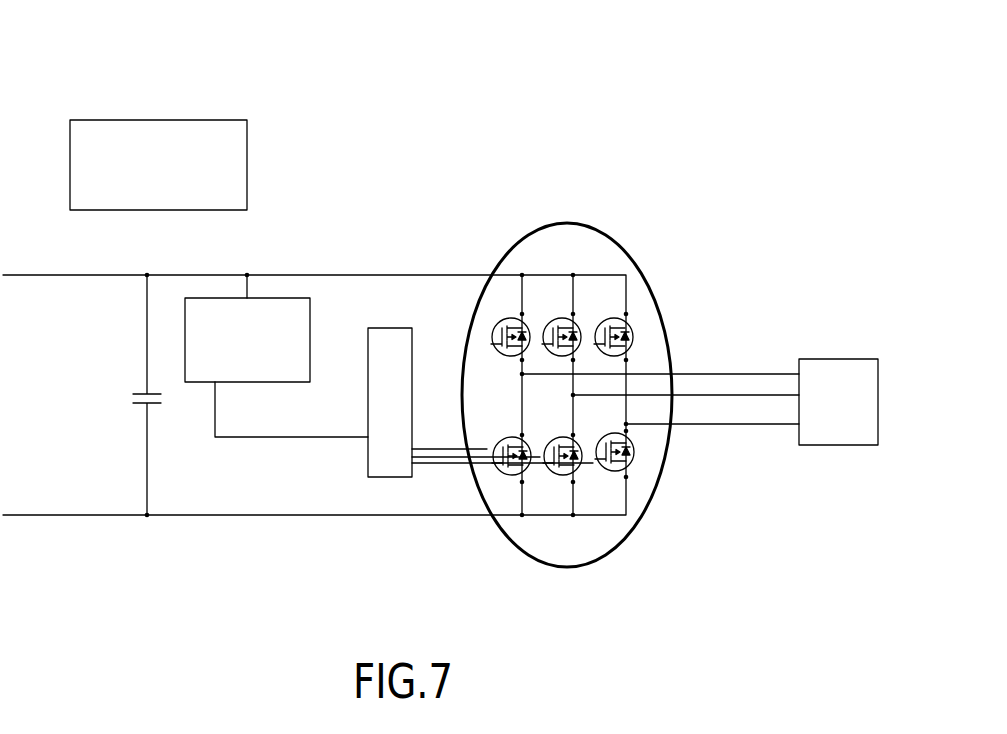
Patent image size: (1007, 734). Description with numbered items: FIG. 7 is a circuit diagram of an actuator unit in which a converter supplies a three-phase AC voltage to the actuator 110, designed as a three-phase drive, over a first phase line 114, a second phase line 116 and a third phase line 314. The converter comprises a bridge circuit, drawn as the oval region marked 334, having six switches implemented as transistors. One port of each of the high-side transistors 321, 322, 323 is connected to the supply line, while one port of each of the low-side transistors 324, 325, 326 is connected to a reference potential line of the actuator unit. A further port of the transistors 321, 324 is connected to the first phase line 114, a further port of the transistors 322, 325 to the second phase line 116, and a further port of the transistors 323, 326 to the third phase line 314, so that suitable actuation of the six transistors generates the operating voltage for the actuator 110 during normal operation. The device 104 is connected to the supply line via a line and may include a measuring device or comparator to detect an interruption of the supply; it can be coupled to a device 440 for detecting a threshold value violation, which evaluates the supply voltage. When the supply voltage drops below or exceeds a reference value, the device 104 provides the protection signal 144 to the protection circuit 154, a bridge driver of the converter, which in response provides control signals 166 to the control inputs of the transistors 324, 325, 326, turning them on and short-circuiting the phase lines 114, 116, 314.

The device for detecting a threshold value violation 440 is at (158, 120).
The transistor 322 is at (133, 404).
The device 104 is at (284, 298).
The protection signal 144 is at (305, 438).
The protection circuit 154 is at (392, 328).
The inverter bridge 334 is at (660, 292).
The transistor 321 is at (503, 322).
The transistor 323 is at (603, 322).
The transistor 324 is at (497, 476).
The transistor 325 is at (548, 477).
The transistor 326 is at (603, 478).
The control signals 166 is at (447, 497).
The first phase line 114 is at (692, 374).
The second phase line 116 is at (745, 395).
The third phase line 314 is at (708, 425).
The actuator 110 is at (845, 358).